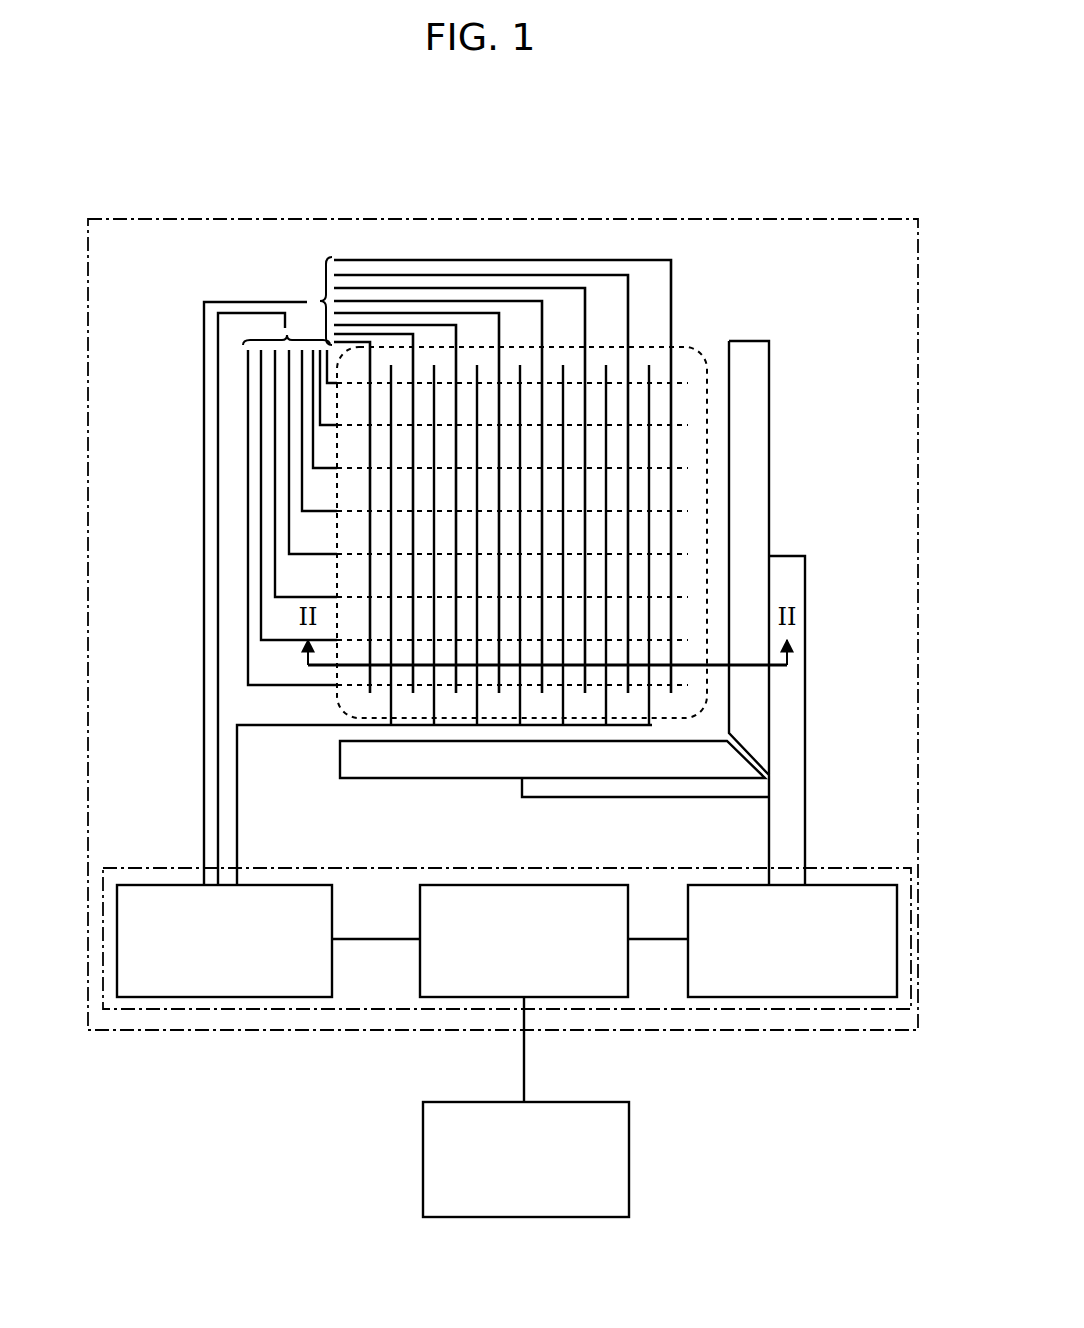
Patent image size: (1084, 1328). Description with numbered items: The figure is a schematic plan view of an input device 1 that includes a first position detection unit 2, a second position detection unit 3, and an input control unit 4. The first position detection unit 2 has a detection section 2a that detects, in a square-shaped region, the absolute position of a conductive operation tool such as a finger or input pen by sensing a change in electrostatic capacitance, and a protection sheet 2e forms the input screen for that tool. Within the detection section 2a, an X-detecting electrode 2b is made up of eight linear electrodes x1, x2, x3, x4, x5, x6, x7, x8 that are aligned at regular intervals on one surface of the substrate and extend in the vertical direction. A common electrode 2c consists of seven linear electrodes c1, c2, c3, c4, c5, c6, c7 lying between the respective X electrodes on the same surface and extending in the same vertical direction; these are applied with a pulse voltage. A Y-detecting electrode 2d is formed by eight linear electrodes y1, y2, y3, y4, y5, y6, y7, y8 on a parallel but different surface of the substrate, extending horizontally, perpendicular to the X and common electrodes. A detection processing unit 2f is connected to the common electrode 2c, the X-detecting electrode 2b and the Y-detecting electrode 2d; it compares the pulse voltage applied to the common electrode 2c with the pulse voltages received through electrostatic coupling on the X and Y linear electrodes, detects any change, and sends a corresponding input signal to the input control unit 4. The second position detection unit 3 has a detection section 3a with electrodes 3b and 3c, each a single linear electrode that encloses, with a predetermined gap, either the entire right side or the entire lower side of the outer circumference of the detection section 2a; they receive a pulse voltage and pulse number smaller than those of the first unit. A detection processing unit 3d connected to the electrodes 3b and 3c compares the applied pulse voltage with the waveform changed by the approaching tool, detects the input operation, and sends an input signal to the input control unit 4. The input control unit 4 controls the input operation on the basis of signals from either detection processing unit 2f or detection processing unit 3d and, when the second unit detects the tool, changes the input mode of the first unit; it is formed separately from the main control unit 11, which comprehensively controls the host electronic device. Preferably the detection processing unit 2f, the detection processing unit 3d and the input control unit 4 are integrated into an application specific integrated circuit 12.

The input device 1 is at (813, 216).
The first position detection unit 2 is at (680, 244).
The detection section 2a is at (546, 429).
The X-detecting electrode 2b is at (678, 318).
The common electrode 2c is at (460, 625).
The Y-detecting electrode 2d is at (241, 590).
The protection sheet 2e is at (690, 350).
The detection processing unit 2f is at (179, 884).
The second position detection unit 3 is at (770, 341).
The detection section 3a is at (772, 408).
The electrode 3b is at (771, 478).
The electrode 3c is at (341, 779).
The detection processing unit 3d is at (840, 884).
The input control unit 4 is at (465, 998).
The main control unit 11 is at (630, 1140).
The application specific integrated circuit 12 is at (178, 1011).
The linear electrode x1 is at (370, 362).
The linear electrode x2 is at (413, 362).
The linear electrode x3 is at (456, 362).
The linear electrode x4 is at (499, 362).
The linear electrode x5 is at (542, 362).
The linear electrode x6 is at (585, 362).
The linear electrode x7 is at (628, 362).
The linear electrode x8 is at (671, 362).
The linear electrode y1 is at (337, 685).
The linear electrode y2 is at (337, 640).
The linear electrode y3 is at (337, 597).
The linear electrode y4 is at (337, 554).
The linear electrode y5 is at (337, 511).
The linear electrode y6 is at (337, 468).
The linear electrode y7 is at (337, 425).
The linear electrode y8 is at (337, 383).
The linear electrode c1 is at (391, 674).
The linear electrode c2 is at (434, 674).
The linear electrode c3 is at (477, 674).
The linear electrode c4 is at (520, 674).
The linear electrode c5 is at (563, 674).
The linear electrode c6 is at (606, 674).
The linear electrode c7 is at (649, 674).